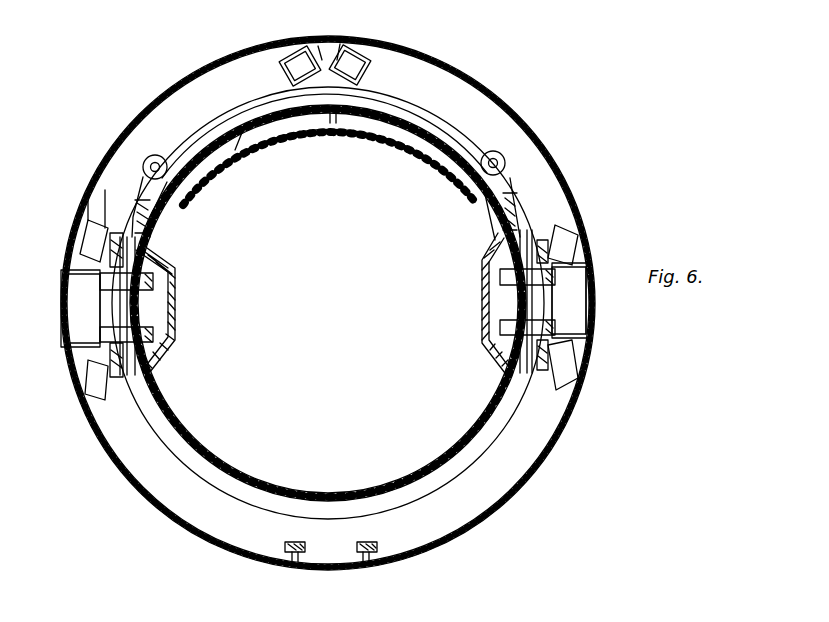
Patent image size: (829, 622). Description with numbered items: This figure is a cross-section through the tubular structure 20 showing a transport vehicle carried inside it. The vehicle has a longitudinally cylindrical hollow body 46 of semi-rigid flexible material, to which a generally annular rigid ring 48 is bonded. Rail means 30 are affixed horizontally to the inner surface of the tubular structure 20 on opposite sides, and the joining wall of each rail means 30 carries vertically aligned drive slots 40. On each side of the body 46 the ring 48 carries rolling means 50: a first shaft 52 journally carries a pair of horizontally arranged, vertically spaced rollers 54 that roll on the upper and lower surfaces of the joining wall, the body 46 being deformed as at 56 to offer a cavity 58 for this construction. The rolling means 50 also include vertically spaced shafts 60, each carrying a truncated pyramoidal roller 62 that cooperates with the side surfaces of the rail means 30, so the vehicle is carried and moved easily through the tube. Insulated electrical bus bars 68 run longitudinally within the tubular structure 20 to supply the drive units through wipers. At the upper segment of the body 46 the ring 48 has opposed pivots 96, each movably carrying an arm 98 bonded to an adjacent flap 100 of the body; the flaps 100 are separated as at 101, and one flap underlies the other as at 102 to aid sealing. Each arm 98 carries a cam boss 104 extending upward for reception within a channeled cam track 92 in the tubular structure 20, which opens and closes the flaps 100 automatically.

The tubular structure 20 is at (328, 303).
The rail means 30 is at (75, 333).
The drive slots 40 is at (555, 305).
The cylindrical hollow body 46 is at (452, 462).
The rigid ring 48 is at (402, 500).
The rolling means 50 is at (95, 215).
The first shaft 52 is at (162, 350).
The rollers 54 is at (508, 328).
The deformation 56 is at (507, 278).
The cavity 58 is at (150, 268).
The shafts 60 is at (103, 200).
The truncated pyramoidal roller 62 is at (90, 240).
The electrical bus bars 68 is at (365, 555).
The cam tracks 92 is at (340, 46).
The pivots 96 is at (153, 167).
The arm 98 is at (223, 122).
The flaps 100 is at (260, 122).
The separation 101 is at (333, 120).
The underlying flap portion 102 is at (262, 108).
The cam boss 104 is at (295, 60).